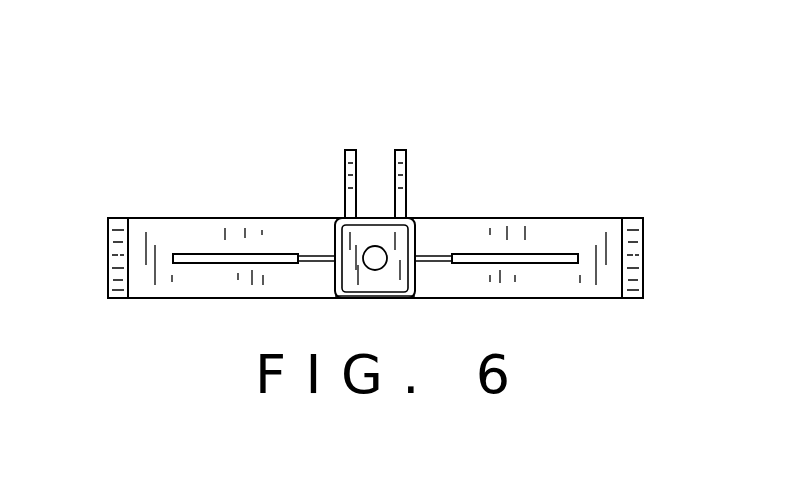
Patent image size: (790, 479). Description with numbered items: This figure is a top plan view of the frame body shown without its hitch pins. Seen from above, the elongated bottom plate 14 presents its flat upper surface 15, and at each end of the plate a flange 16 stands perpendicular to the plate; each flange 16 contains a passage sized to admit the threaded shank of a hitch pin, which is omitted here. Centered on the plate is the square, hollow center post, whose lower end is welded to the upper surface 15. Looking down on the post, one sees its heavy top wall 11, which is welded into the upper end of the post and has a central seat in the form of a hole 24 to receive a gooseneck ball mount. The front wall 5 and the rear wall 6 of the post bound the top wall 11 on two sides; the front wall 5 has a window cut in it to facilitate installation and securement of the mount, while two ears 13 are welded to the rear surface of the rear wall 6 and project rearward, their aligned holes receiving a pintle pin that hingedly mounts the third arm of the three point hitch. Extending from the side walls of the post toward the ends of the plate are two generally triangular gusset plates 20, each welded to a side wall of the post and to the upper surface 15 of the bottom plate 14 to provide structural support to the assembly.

The front wall 5 is at (385, 298).
The rear wall 6 is at (408, 226).
The top wall 11 is at (398, 242).
The ears 13 is at (345, 172).
The bottom plate 14 is at (527, 219).
The upper surface 15 is at (585, 240).
The flanges 16 is at (118, 218).
The gusset plates 20 is at (230, 254).
The hole 24 is at (372, 262).